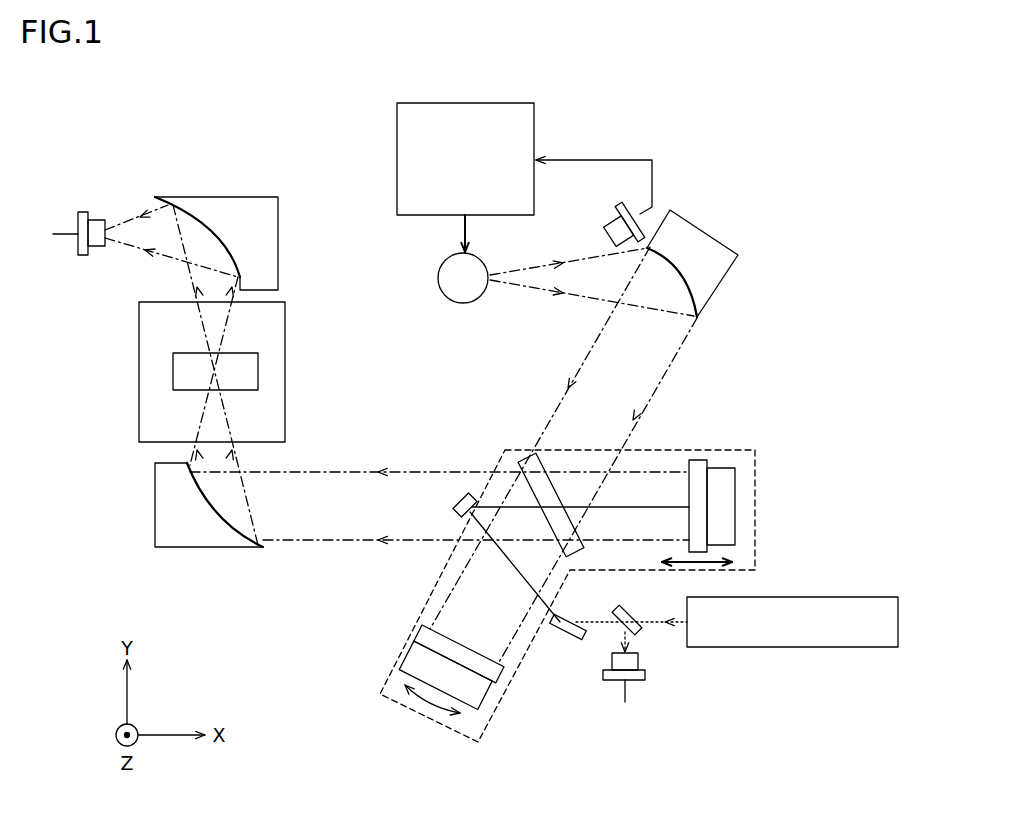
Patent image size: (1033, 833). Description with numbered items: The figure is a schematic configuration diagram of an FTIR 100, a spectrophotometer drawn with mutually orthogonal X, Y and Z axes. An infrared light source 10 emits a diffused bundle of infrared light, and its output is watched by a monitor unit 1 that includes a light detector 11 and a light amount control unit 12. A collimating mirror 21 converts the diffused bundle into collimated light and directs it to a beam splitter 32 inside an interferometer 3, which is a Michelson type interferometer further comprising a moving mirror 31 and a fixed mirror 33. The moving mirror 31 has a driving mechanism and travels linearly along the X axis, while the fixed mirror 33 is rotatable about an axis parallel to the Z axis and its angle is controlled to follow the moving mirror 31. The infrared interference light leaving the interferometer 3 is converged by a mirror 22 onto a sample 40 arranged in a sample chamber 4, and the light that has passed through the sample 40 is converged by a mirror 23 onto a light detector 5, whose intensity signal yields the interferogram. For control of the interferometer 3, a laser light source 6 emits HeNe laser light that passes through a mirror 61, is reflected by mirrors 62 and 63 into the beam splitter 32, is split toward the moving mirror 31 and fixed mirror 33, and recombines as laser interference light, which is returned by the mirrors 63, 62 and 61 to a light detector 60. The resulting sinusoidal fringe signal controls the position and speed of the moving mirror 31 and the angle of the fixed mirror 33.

The FTIR 100 is at (92, 91).
The monitor unit 1 is at (577, 145).
The infrared light source 10 is at (438, 278).
The light detector 11 is at (604, 229).
The light amount control unit 12 is at (465, 103).
The collimating mirror 21 is at (708, 226).
The mirror 22 is at (155, 507).
The mirror 23 is at (248, 196).
The interferometer 3 is at (418, 621).
The moving mirror 31 is at (735, 507).
The beam splitter 32 is at (530, 458).
The fixed mirror 33 is at (412, 653).
The sample chamber 4 is at (138, 373).
The sample 40 is at (258, 373).
The light detector 5 is at (82, 211).
The laser light source 6 is at (820, 596).
The light detector 60 is at (646, 675).
The mirror 61 is at (632, 607).
The mirror 62 is at (570, 636).
The mirror 63 is at (466, 495).